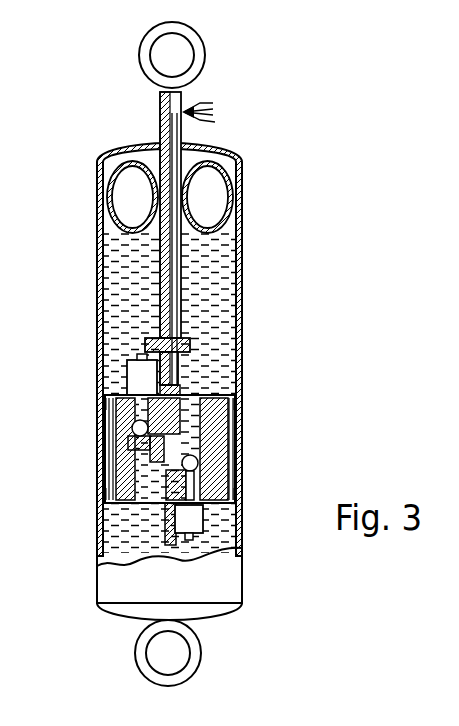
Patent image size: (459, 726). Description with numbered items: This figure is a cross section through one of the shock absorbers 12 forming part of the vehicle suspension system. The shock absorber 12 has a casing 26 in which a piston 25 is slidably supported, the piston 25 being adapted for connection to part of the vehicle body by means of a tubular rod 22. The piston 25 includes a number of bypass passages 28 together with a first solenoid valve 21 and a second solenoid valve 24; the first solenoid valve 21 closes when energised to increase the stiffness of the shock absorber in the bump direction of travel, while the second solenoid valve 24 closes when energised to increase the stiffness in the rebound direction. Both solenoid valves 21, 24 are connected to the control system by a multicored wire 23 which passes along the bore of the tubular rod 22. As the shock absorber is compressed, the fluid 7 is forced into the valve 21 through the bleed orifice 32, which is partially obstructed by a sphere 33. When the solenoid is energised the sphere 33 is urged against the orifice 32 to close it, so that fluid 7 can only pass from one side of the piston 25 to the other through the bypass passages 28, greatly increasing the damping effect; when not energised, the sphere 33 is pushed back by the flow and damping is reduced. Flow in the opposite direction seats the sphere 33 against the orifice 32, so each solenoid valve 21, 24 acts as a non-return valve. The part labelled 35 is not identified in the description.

The fluid 7 is at (131, 281).
The shock absorber 12 is at (245, 264).
The first solenoid valve 21 is at (127, 362).
The tubular rod 22 is at (182, 262).
The multicored wire 23 is at (215, 122).
The second solenoid valve 24 is at (203, 522).
The piston 25 is at (234, 442).
The casing 26 is at (243, 358).
The bypass passages 28 is at (110, 468).
The bleed orifice 32 is at (112, 440).
The sphere 33 is at (115, 405).
The piston top 35 is at (228, 393).